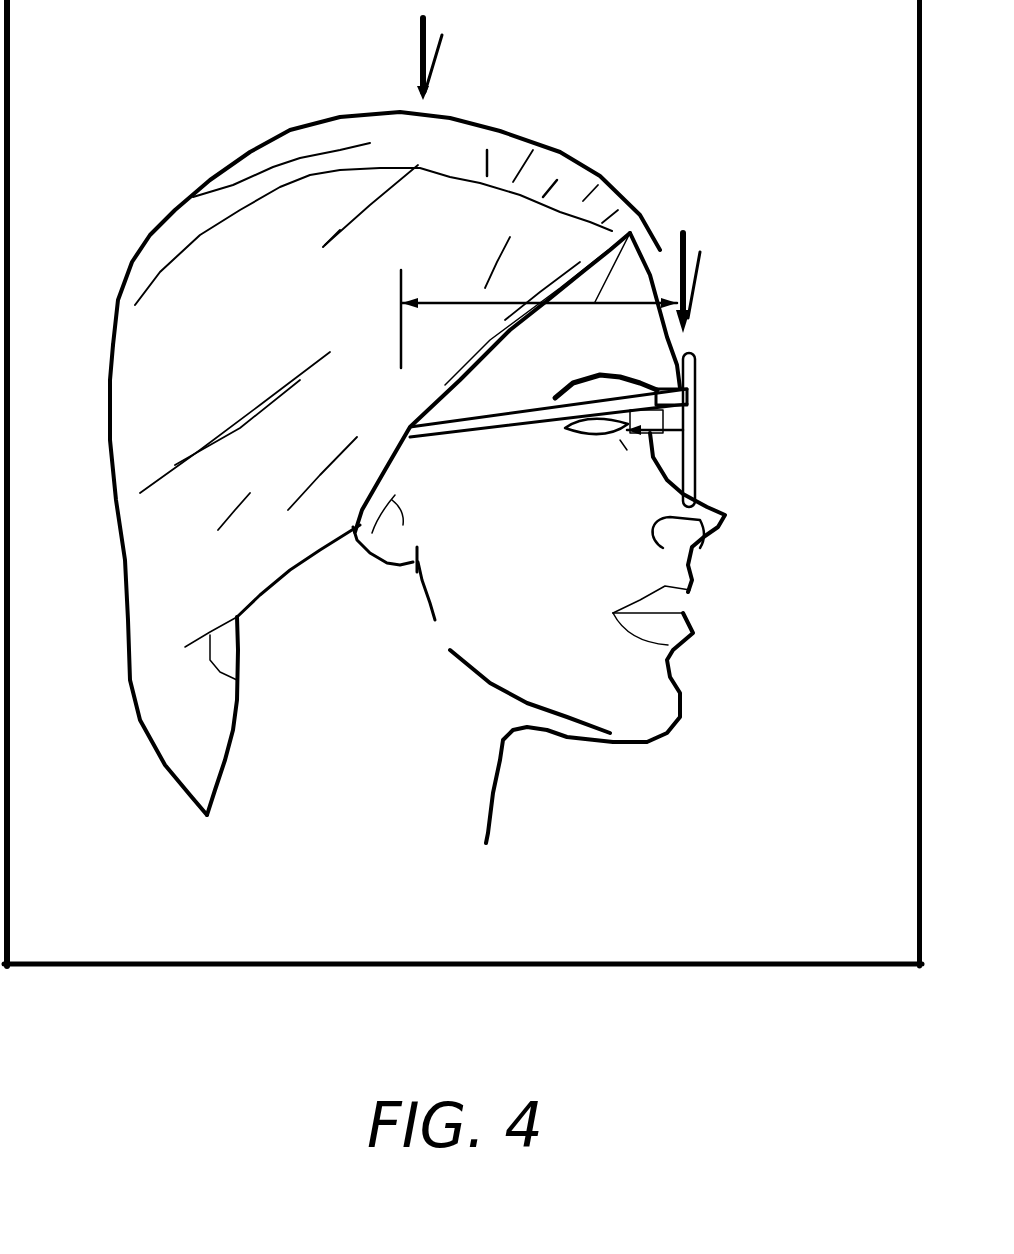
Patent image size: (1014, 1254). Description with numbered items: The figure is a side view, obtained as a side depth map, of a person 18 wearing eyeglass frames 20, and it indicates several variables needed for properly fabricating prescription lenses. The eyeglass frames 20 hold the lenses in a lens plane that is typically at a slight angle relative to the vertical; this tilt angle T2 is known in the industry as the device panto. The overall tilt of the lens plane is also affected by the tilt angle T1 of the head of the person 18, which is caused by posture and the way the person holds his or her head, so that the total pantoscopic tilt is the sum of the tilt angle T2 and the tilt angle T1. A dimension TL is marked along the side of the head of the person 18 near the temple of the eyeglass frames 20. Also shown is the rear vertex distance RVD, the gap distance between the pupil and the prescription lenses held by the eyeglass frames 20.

The person 18 is at (563, 160).
The eyeglass frames 20 is at (700, 400).
The tilt angle of the person's head T1 is at (435, 52).
The tilt angle of the lens plane T2 is at (700, 265).
The temple length dimension TL is at (630, 233).
The rear vertex distance RVD is at (695, 478).